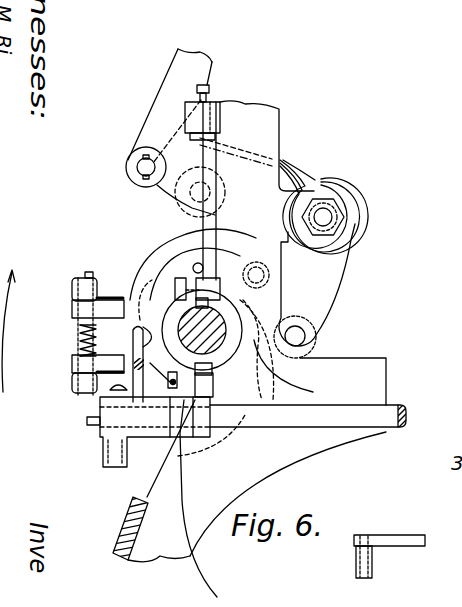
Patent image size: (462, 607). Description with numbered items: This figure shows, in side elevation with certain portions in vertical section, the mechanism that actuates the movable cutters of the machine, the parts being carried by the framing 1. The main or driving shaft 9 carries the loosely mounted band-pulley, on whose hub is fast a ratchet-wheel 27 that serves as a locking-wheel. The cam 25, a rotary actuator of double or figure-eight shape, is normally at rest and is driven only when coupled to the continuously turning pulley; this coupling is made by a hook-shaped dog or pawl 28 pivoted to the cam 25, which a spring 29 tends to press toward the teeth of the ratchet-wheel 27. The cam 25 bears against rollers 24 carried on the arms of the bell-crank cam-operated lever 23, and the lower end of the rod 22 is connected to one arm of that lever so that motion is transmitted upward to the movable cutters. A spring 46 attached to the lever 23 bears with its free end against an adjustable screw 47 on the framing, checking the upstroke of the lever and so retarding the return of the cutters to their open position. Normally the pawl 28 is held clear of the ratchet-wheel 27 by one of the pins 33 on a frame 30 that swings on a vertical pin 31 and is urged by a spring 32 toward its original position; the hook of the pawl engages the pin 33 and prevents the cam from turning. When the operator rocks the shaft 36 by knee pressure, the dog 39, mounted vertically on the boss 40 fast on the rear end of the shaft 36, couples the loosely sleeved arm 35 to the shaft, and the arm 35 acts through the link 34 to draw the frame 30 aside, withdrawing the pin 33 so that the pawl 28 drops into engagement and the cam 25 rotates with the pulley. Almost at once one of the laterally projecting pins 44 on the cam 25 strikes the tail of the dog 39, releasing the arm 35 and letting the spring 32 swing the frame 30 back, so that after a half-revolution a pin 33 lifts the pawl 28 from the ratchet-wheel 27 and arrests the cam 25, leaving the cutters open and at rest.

The framing 1 is at (118, 533).
The main or driving shaft 9 is at (146, 312).
The rod 22 is at (170, 79).
The cam-operated lever 23 is at (241, 177).
The rollers 24 is at (321, 340).
The cam 25 is at (148, 252).
The ratchet-wheel 27 is at (320, 373).
The dog or pawl 28 is at (281, 248).
The spring 29 is at (341, 236).
The frame 30 is at (110, 293).
The vertical pin 31 is at (100, 400).
The spring 32 is at (77, 343).
The pins 33 is at (196, 264).
The link 34 is at (80, 328).
The arm 35 is at (137, 348).
The shaft 36 is at (378, 417).
The dog 39 is at (393, 535).
The boss 40 is at (93, 423).
The pins 44 is at (231, 228).
The spring 46 is at (291, 168).
The screw 47 is at (210, 86).